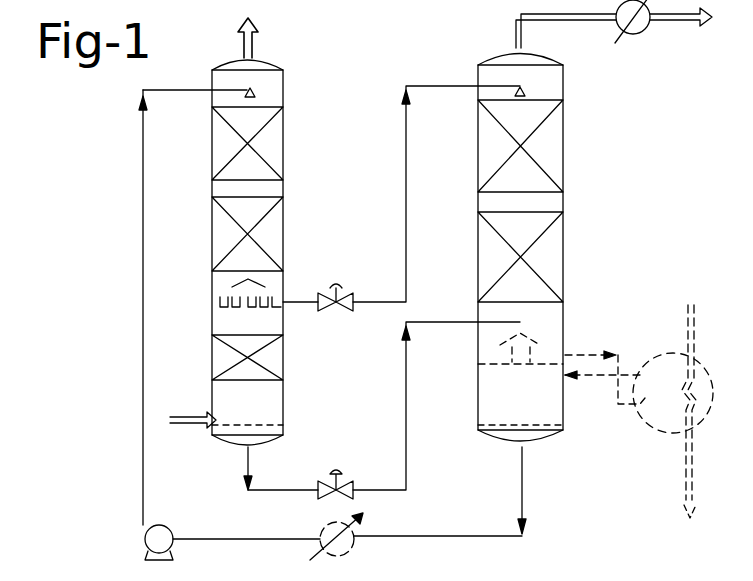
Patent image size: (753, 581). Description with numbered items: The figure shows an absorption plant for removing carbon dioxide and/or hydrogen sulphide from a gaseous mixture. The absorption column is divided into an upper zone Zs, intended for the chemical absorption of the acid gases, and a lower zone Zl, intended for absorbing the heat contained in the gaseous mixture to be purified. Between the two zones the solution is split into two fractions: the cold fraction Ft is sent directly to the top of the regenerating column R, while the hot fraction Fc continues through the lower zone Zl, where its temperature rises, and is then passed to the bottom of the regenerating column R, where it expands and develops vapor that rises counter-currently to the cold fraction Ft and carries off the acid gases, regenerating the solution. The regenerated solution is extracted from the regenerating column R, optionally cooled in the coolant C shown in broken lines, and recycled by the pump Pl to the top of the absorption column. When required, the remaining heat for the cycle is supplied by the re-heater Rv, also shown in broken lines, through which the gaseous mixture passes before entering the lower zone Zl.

The upper zone Zs is at (213, 231).
The lower zone Zl is at (226, 353).
The pump Pl is at (156, 335).
The coolant C is at (347, 532).
The hot fraction Fc is at (382, 410).
The cold fraction Ft is at (404, 198).
The regenerating column R is at (595, 267).
The re-heater Rv is at (643, 411).